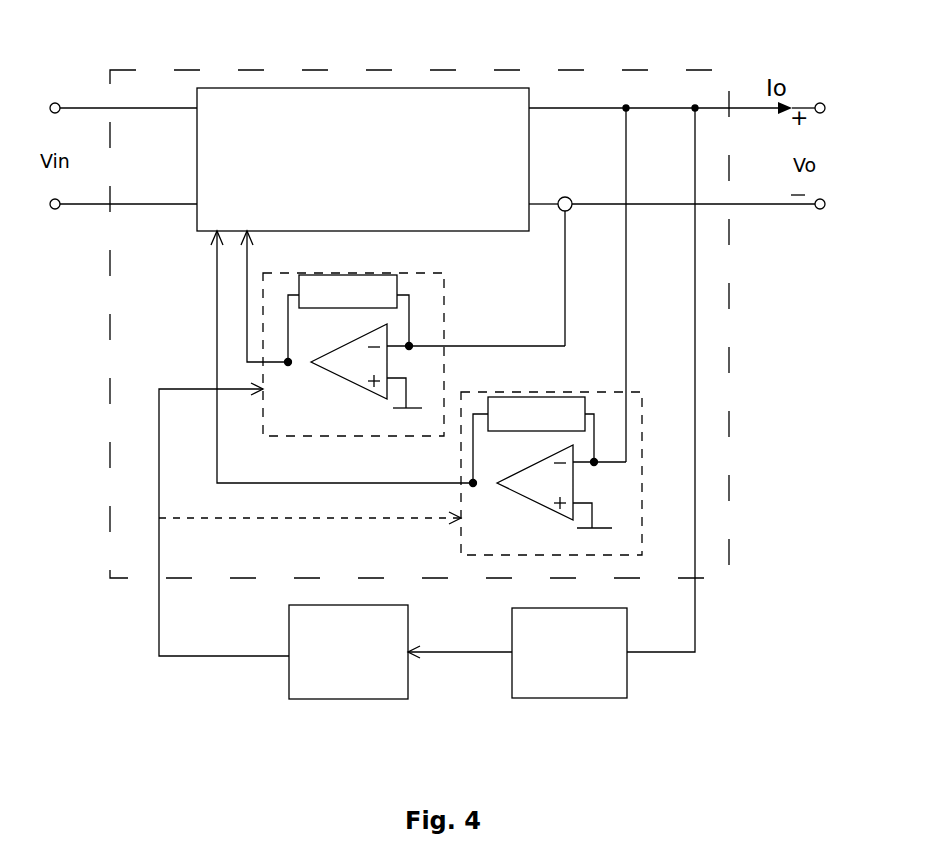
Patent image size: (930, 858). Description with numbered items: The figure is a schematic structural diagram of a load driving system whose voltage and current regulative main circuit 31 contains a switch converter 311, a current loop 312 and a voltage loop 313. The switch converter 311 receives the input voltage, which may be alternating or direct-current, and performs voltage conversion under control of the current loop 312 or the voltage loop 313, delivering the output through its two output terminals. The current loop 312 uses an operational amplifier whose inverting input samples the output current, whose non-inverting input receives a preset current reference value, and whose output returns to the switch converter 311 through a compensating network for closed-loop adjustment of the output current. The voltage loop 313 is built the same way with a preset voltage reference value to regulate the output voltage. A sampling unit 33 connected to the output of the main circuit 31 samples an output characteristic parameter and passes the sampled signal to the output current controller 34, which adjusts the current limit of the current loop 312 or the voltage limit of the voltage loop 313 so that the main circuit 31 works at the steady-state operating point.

The voltage and current regulative main circuit 31 is at (322, 70).
The switch converter 311 is at (505, 83).
The current loop 312 is at (444, 302).
The voltage loop 313 is at (638, 455).
The sampling unit 33 is at (580, 699).
The output current controller 34 is at (342, 703).